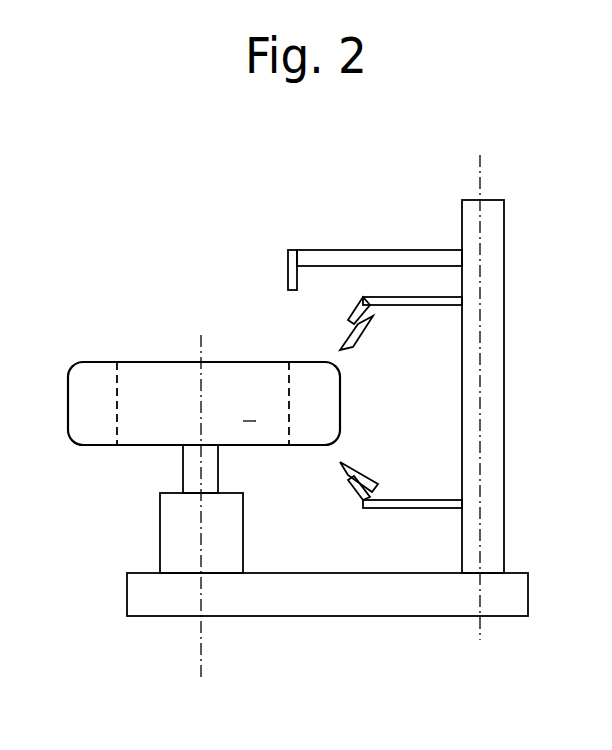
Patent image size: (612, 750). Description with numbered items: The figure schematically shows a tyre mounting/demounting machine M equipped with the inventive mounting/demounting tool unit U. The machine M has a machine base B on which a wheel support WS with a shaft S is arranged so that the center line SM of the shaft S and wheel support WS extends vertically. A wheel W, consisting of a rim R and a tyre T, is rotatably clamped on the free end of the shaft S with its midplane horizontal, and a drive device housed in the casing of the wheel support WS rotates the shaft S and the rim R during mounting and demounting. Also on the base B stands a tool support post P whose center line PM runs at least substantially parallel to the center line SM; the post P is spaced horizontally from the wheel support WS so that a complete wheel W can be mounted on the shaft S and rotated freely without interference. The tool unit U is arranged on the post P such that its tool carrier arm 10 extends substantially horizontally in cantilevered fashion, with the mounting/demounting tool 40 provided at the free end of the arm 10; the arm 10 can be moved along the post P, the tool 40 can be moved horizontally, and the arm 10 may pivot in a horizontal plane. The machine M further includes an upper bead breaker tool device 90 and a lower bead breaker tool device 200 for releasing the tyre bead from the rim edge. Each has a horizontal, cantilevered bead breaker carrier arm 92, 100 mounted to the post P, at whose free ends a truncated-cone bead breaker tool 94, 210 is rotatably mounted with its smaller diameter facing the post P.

The tool carrier arm 10 is at (353, 248).
The mounting/demounting tool 40 is at (288, 268).
The bead breaker carrier arm 92 is at (387, 296).
The upper bead breaker tool device 90 is at (338, 337).
The bead breaker tool 94 is at (362, 336).
The bead breaker carrier arm 100 is at (422, 510).
The lower bead breaker tool device 200 is at (331, 466).
The bead breaker tool 210 is at (359, 462).
The machine base B is at (327, 617).
The tool support post P is at (497, 402).
The center line of tool support post PM is at (478, 160).
The tyre mounting/demounting machine M is at (508, 271).
The mounting/demounting tool unit U is at (342, 246).
The wheel W is at (184, 367).
The tyre T is at (75, 388).
The rim R is at (133, 372).
The shaft S is at (183, 468).
The wheel support WS is at (160, 532).
The center line of shaft SM is at (208, 682).